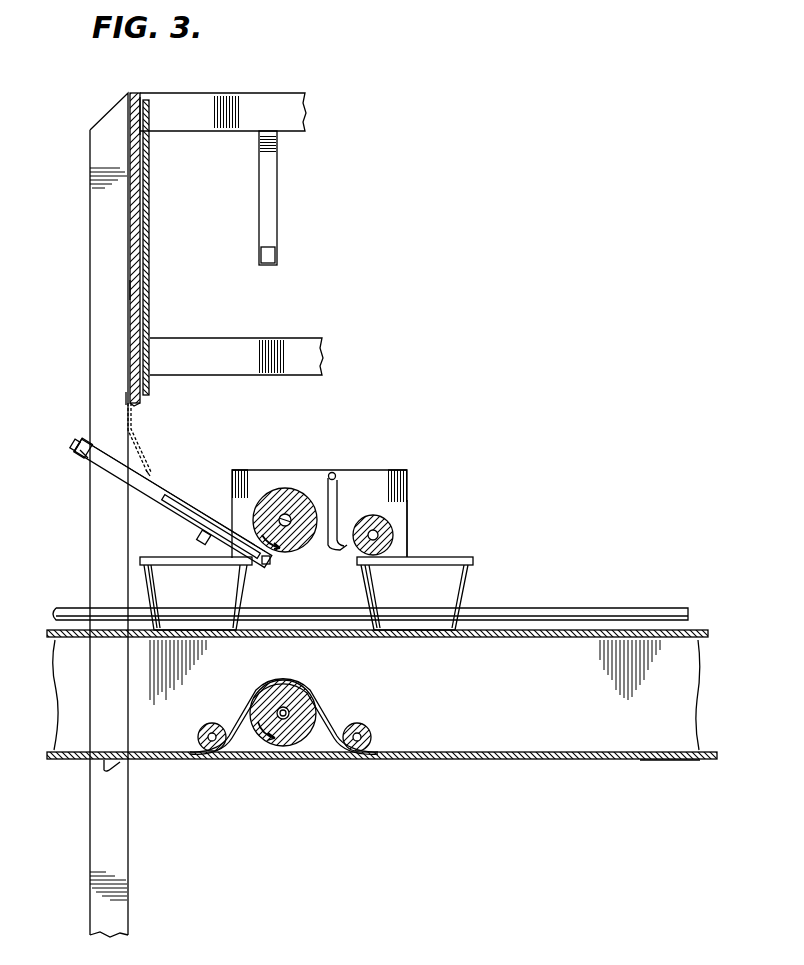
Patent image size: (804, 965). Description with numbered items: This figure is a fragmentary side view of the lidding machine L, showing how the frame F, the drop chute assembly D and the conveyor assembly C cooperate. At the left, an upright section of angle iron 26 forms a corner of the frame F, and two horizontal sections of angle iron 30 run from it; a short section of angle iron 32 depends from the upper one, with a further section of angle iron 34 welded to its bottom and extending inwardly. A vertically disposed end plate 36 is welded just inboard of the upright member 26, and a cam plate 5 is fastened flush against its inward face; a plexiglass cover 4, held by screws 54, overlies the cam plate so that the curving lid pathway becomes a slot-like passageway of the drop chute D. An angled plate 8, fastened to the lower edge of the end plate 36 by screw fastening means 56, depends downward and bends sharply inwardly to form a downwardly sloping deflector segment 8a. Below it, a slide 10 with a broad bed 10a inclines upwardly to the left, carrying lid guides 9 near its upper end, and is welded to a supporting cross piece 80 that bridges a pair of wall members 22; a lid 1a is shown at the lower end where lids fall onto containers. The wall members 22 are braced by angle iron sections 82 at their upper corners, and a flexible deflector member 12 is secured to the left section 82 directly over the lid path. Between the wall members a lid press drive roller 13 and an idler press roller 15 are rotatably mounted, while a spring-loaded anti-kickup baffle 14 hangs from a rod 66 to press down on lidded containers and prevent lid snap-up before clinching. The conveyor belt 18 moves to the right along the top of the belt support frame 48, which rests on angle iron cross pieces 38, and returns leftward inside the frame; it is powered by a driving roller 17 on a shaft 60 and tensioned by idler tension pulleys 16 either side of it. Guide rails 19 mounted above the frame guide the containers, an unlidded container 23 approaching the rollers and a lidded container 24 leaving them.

The upright sections of angle iron 26 is at (120, 265).
The plexiglass cover 4 is at (133, 190).
The screws 54 is at (183, 388).
The end plate 36 is at (130, 289).
The screw fastening means 56 is at (126, 398).
The cam plate 5 is at (143, 147).
The sections of angle iron 30 is at (332, 325).
The section of angle iron 32 is at (270, 200).
The section of angle iron 34 is at (261, 255).
The angled plate 8 is at (152, 432).
The deflector segment 8a is at (150, 468).
The slide 10 is at (94, 488).
The bed 10a is at (92, 458).
The lid guides 9 is at (74, 443).
The supporting cross piece 80 is at (198, 537).
The lid 1a is at (270, 562).
The flexible deflector member 12 is at (225, 500).
The angle iron sections 82 is at (386, 455).
The wall members 22 is at (400, 525).
The lid press drive roller 13 is at (285, 500).
The idler press roller 15 is at (372, 514).
The rod 66 is at (334, 474).
The anti-kickup baffle 14 is at (318, 476).
The container 23 is at (250, 598).
The lidded container 24 is at (466, 592).
The guide rails 19 is at (572, 612).
The conveyor belt 18 is at (718, 735).
The belt support frame 48 is at (645, 761).
The driving roller 17 is at (292, 697).
The shaft 60 is at (284, 707).
The idler tension pulleys 16 is at (394, 728).
The angle iron cross pieces 38 is at (108, 770).
The frame F is at (182, 86).
The drop chute assembly D is at (188, 330).
The lidding machine L is at (396, 161).
The conveyor assembly C is at (560, 575).